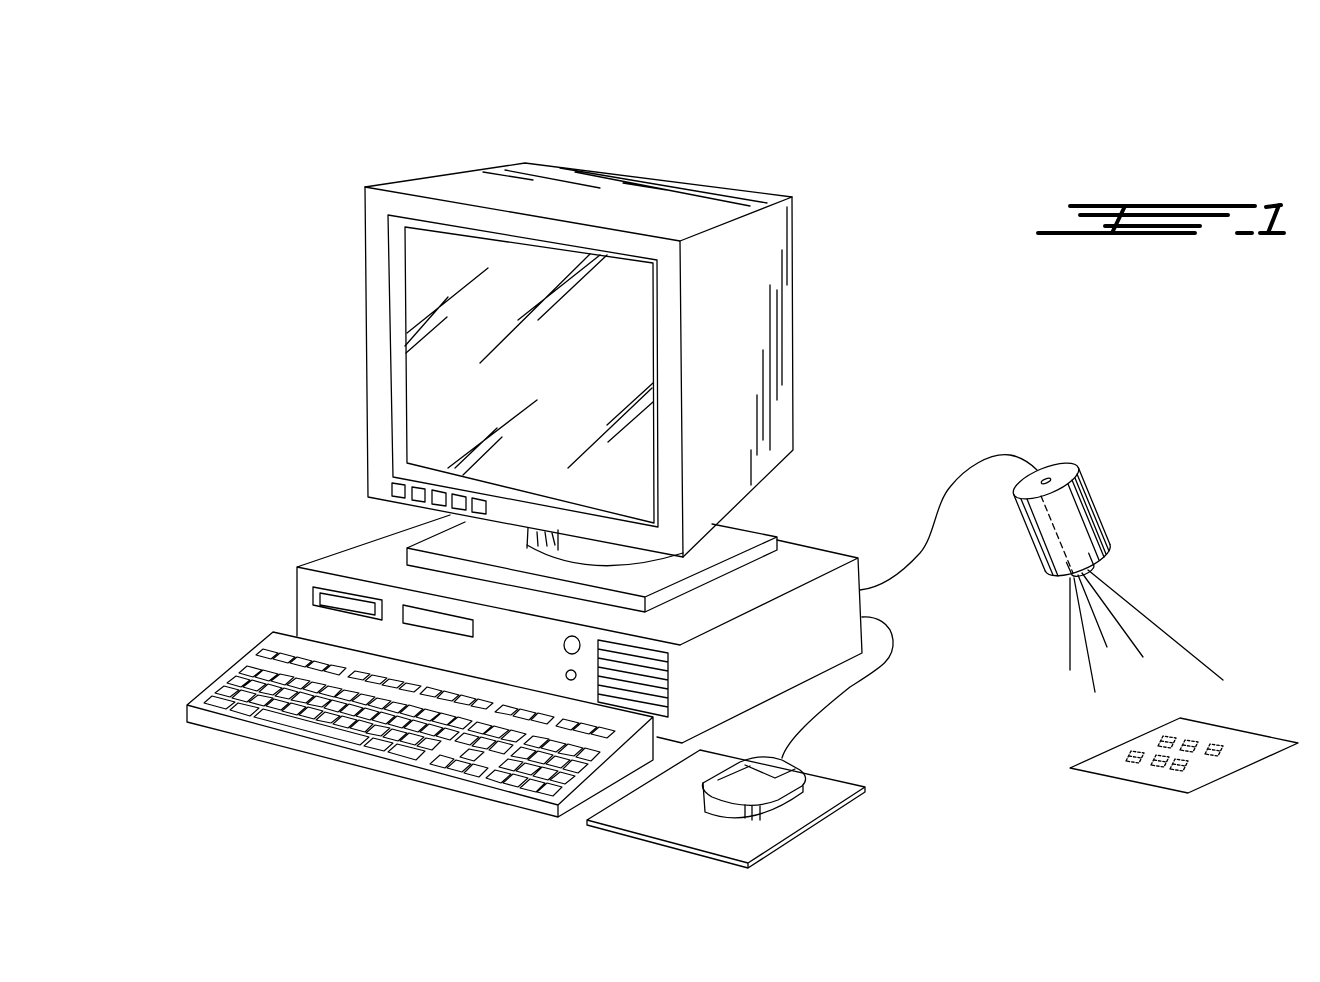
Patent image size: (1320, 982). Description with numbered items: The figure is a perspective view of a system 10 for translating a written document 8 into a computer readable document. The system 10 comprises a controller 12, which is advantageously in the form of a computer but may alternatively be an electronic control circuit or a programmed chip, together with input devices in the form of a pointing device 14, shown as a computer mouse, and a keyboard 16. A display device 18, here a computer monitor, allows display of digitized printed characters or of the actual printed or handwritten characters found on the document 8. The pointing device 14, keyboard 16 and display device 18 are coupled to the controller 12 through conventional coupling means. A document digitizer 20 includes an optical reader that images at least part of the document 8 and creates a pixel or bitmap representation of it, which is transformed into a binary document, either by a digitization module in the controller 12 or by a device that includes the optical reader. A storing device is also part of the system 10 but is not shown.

The system 10 is at (295, 163).
The controller 12 is at (327, 580).
The pointing device 14 is at (773, 787).
The keyboard 16 is at (363, 743).
The display device 18 is at (560, 283).
The document digitizer 20 is at (1090, 490).
The written document 8 is at (1192, 778).